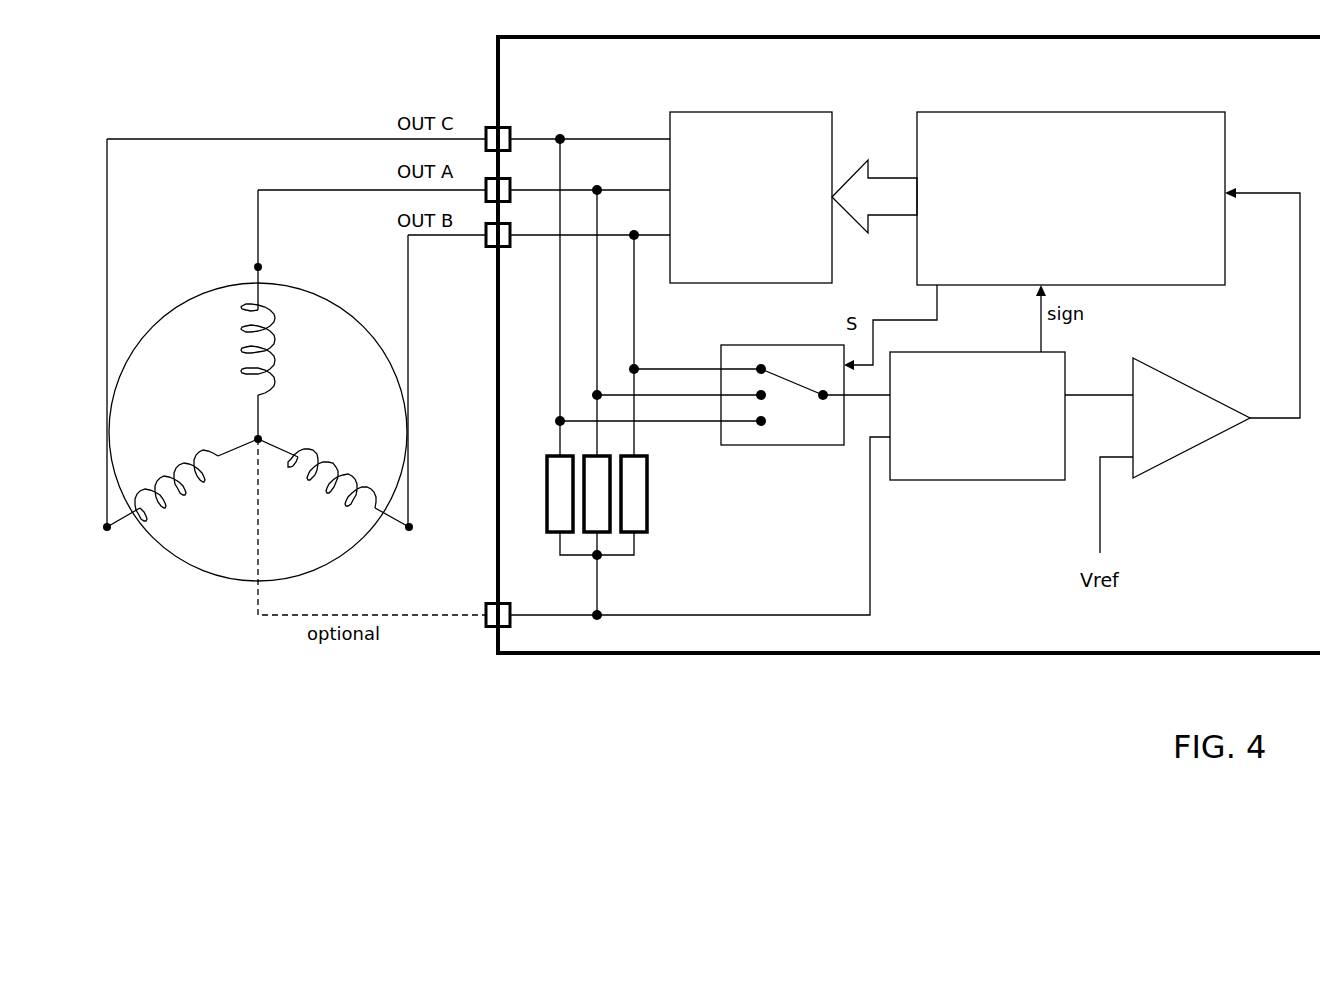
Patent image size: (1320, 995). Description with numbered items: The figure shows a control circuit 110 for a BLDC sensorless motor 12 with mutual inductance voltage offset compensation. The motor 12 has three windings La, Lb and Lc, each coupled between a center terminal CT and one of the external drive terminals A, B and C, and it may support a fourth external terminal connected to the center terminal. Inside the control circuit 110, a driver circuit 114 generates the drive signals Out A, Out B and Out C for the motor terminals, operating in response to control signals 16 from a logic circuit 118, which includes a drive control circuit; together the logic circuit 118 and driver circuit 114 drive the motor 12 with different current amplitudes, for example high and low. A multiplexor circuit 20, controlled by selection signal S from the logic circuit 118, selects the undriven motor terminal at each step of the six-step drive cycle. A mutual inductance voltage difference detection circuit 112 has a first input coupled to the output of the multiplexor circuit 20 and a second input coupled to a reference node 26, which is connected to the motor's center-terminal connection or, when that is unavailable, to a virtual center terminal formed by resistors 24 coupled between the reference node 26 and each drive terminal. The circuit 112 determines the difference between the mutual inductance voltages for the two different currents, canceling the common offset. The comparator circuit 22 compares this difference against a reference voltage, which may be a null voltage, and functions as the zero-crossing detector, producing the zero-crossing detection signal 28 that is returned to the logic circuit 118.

The motor 12 is at (194, 608).
The control signals 16 is at (900, 220).
The multiplexor circuit 20 is at (782, 445).
The comparator circuit 22 is at (1190, 440).
The resistors 24 is at (669, 491).
The reference node 26 is at (733, 615).
The zero-crossing detection signal 28 is at (1258, 425).
The control circuit 110 is at (718, 655).
The mutual inductance voltage difference detection circuit 112 is at (977, 480).
The driver circuit 114 is at (704, 283).
The logic circuit 118 is at (1187, 285).